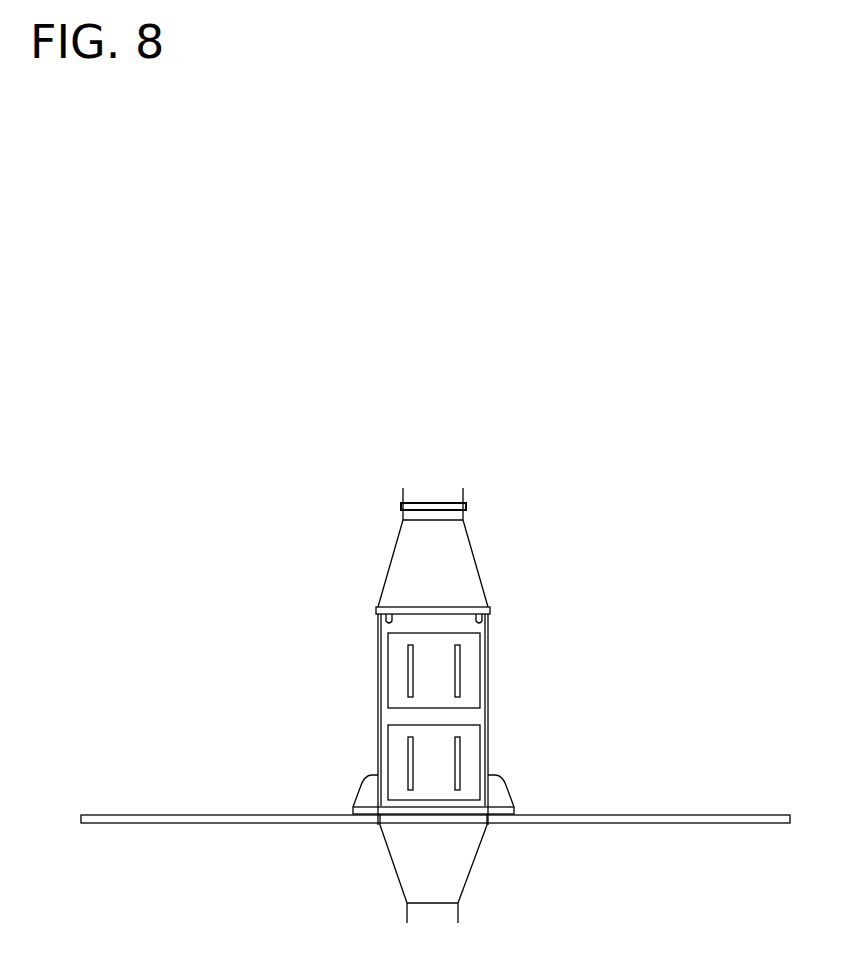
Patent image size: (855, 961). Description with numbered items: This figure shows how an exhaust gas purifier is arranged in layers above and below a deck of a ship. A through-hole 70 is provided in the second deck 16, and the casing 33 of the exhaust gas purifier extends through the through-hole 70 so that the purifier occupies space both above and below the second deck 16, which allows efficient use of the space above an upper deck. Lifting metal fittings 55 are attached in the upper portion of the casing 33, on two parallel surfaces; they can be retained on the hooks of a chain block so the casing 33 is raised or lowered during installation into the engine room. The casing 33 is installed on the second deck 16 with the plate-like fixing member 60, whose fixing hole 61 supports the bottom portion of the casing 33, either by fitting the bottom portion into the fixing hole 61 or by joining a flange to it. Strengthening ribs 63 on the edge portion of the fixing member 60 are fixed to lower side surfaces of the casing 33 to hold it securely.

The second deck 16 is at (258, 818).
The casing 33 is at (355, 582).
The lifting metal fittings 55 is at (380, 617).
The fixing member 60 is at (445, 796).
The fixing hole 61 is at (488, 830).
The strengthening ribs 63 is at (365, 782).
The through-hole 70 is at (385, 832).